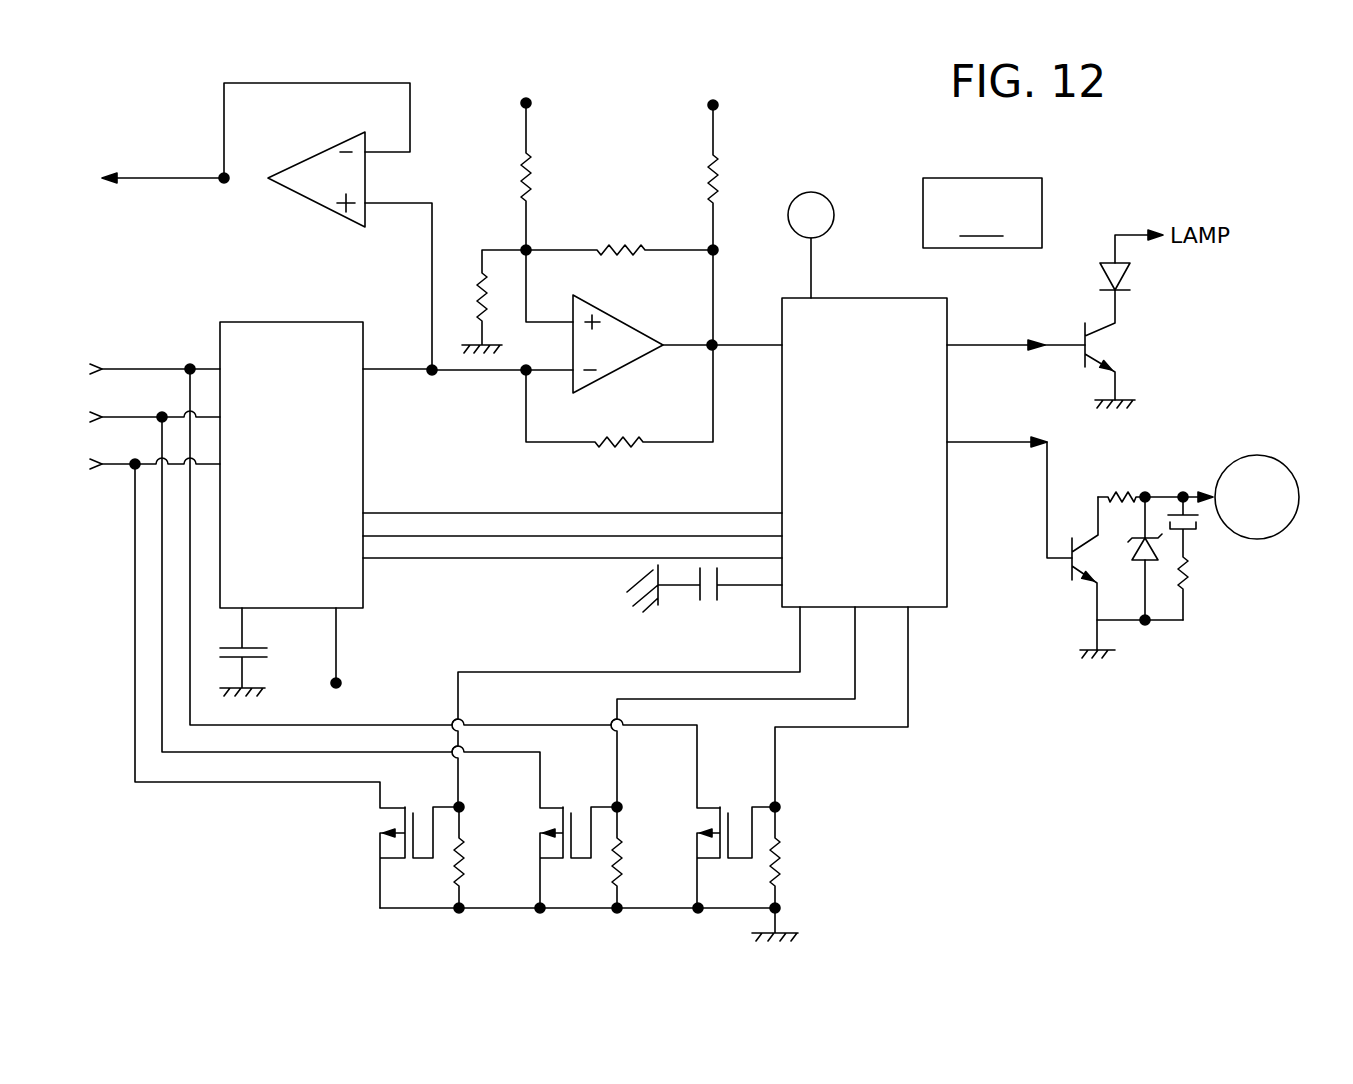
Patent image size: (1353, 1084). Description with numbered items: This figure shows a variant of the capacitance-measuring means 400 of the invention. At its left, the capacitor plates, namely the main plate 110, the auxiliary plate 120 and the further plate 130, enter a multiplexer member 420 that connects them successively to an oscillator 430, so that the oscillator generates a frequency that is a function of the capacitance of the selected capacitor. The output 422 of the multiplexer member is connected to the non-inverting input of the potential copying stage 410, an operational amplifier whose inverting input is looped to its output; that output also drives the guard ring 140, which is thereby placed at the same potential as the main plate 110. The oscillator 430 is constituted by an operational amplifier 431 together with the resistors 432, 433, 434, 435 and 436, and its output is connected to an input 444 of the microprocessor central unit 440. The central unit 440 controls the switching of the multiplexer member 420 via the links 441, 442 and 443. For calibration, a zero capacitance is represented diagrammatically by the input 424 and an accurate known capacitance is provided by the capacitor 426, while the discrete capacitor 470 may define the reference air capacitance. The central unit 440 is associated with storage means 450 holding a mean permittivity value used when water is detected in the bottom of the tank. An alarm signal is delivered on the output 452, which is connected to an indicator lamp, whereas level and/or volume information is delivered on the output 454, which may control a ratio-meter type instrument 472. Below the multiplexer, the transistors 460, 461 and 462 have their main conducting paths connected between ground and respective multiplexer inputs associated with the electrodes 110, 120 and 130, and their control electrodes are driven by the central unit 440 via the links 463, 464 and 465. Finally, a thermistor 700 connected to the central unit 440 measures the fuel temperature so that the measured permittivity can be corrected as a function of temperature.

The main plate 110 is at (386, 581).
The auxiliary plate 120 is at (303, 605).
The plate 130 is at (224, 629).
The guard ring 140 is at (139, 178).
The measurement means 400 is at (486, 127).
The potential copying stage 410 is at (318, 166).
The multiplexer member 420 is at (298, 346).
The output of the multiplexer member 422 is at (409, 341).
The input 424 is at (372, 650).
The capacitor C426 426 is at (267, 652).
The oscillator 430 is at (612, 220).
The operational amplifier 431 is at (607, 309).
The resistor 432 is at (619, 227).
The resistor 433 is at (746, 177).
The resistor 434 is at (489, 179).
The resistor 435 is at (473, 302).
The resistor 436 is at (619, 396).
The microprocessor central unit 440 is at (860, 322).
The link 441 is at (672, 513).
The link 442 is at (600, 536).
The link 443 is at (512, 558).
The input of the central unit 444 is at (759, 344).
The storage means 450 is at (915, 291).
The output 452 is at (991, 345).
The output 454 is at (976, 445).
The transistor T460 460 is at (380, 857).
The transistor T461 461 is at (544, 857).
The transistor T462 462 is at (700, 857).
The link 463 is at (800, 655).
The link 464 is at (858, 655).
The link 465 is at (912, 705).
The capacitor C470 470 is at (700, 603).
The ratio-meter type instrument 472 is at (1262, 539).
The thermistor 700 is at (818, 192).